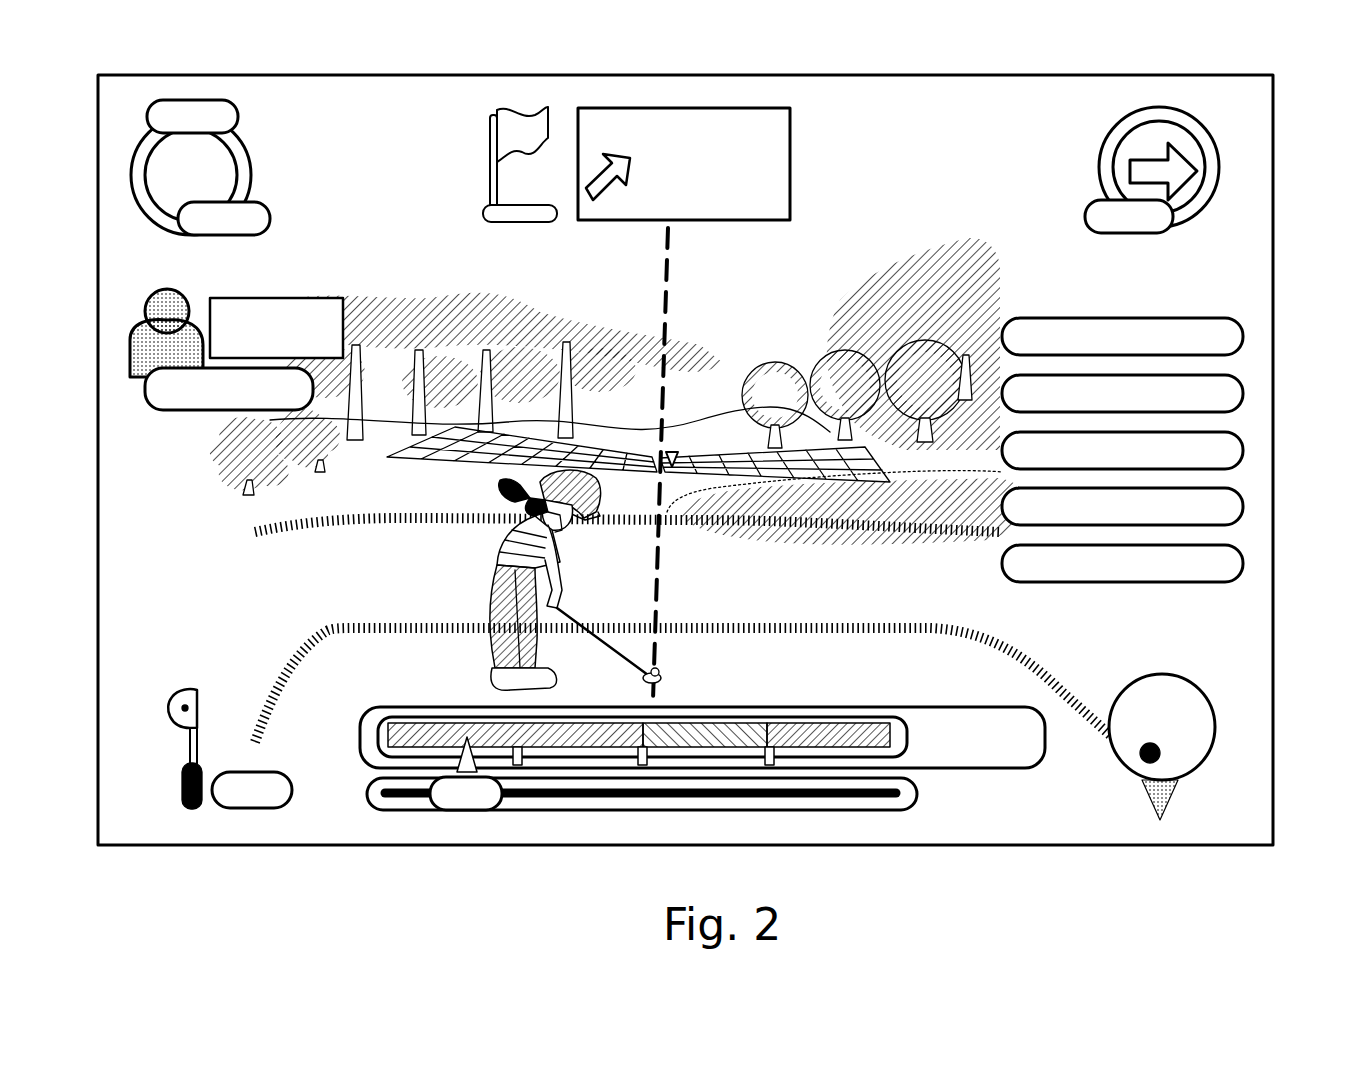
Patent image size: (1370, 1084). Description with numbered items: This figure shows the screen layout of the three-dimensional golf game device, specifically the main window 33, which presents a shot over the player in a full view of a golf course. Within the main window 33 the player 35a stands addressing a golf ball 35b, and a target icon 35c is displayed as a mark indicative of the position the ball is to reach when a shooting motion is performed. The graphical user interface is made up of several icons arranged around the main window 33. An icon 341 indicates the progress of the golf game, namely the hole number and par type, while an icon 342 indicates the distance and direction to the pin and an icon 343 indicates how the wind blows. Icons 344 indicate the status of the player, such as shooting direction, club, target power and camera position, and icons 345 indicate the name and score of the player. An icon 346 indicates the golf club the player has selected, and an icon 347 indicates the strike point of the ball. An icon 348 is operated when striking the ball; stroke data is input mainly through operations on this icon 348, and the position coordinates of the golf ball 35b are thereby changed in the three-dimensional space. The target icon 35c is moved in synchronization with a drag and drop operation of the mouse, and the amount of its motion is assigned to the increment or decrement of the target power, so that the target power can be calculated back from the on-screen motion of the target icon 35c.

The main window 33 is at (1273, 322).
The icon indicative of the progress of the golf game 341 is at (253, 168).
The icon indicative of the distance and direction to the pin 342 is at (792, 190).
The icon indicative of how the wind blows 343 is at (1195, 223).
The icons indicative of the status of the player 344 is at (1263, 527).
The icons indicative of the name and score of the player 345 is at (173, 423).
The icon indicative of the golf club the player has selected 346 is at (210, 717).
The icon indicative of the strike point of the ball 347 is at (1207, 683).
The icon which is operated when striking the ball 348 is at (870, 703).
The player 35a is at (492, 575).
The golf ball 35b is at (660, 674).
The target icon 35c is at (672, 455).